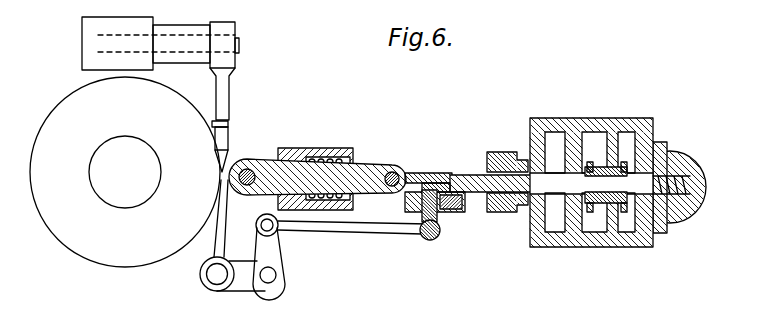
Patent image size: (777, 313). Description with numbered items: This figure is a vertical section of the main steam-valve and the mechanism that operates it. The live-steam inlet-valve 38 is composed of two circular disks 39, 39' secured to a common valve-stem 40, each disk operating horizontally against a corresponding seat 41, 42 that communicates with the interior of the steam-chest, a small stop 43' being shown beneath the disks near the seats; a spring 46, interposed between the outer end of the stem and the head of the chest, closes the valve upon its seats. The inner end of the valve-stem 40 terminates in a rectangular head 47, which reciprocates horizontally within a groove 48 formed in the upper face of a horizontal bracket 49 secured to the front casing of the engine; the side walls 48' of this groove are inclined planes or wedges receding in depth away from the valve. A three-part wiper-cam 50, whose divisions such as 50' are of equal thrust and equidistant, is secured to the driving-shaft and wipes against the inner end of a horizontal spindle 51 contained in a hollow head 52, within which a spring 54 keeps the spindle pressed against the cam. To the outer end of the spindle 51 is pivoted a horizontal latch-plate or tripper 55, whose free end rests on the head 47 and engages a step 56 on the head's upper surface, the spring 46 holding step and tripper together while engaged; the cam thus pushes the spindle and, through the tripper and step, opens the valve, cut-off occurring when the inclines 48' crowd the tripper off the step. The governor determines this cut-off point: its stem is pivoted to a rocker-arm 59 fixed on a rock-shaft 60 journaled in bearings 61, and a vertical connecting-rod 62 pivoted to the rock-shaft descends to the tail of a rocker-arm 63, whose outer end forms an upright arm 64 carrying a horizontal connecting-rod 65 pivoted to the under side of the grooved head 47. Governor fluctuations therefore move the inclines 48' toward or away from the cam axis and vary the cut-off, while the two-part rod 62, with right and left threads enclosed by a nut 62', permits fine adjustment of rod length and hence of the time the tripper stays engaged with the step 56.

The live-steam inlet-valve 38 is at (600, 168).
The circular disk 39 is at (630, 135).
The circular disk 39' is at (590, 135).
The valve-stem 40 is at (552, 183).
The valve-seat 41 is at (568, 246).
The valve-seat 42 is at (612, 214).
The lower stop 43' is at (606, 212).
The spring 46 is at (690, 213).
The rectangular head 47 is at (460, 205).
The groove 48 is at (437, 224).
The inclined plane 48' is at (490, 170).
The bracket 49 is at (452, 212).
The wiper-cam 50 is at (125, 172).
The cam division 50' is at (219, 179).
The spindle 51 is at (317, 177).
The hollow head 52 is at (315, 175).
The spring 54 is at (338, 160).
The tripper 55 is at (430, 184).
The step 56 is at (440, 185).
The rocker-arm 59 is at (158, 43).
The rock-shaft 60 is at (239, 45).
The bearing 61 is at (181, 44).
The connecting-rod 62 is at (222, 162).
The nut 62' is at (236, 145).
The rocker-arm 63 is at (232, 274).
The upright arm 64 is at (269, 257).
The connecting-rod 65 is at (353, 221).